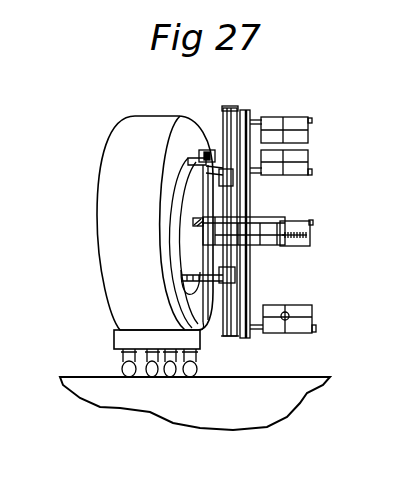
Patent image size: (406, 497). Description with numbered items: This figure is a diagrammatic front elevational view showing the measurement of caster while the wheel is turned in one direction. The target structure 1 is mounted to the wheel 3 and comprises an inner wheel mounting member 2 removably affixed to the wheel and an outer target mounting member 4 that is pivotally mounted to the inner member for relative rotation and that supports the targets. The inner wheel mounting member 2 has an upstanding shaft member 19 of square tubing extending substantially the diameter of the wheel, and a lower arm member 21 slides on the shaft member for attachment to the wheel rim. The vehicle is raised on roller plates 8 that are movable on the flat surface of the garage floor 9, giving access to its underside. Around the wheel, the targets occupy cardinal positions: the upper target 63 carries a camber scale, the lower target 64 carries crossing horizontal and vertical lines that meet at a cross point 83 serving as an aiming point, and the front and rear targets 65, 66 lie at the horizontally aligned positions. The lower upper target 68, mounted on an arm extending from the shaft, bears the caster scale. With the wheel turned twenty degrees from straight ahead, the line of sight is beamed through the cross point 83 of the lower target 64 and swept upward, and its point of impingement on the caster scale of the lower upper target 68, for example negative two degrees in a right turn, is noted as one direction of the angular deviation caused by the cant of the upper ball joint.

The target structure 1 is at (258, 292).
The inner wheel mounting member 2 is at (224, 128).
The wheel 3 is at (126, 119).
The outer target mounting member 4 is at (250, 203).
The roller plates 8 is at (116, 338).
The garage floor 9 is at (300, 387).
The upstanding shaft member 19 is at (228, 110).
The lower arm member 21 is at (199, 282).
The upper target 63 is at (310, 131).
The lower target 64 is at (315, 318).
The front target 65 is at (268, 246).
The rear target 66 is at (312, 240).
The lower upper target 68 is at (310, 164).
The cross point 83 is at (290, 313).